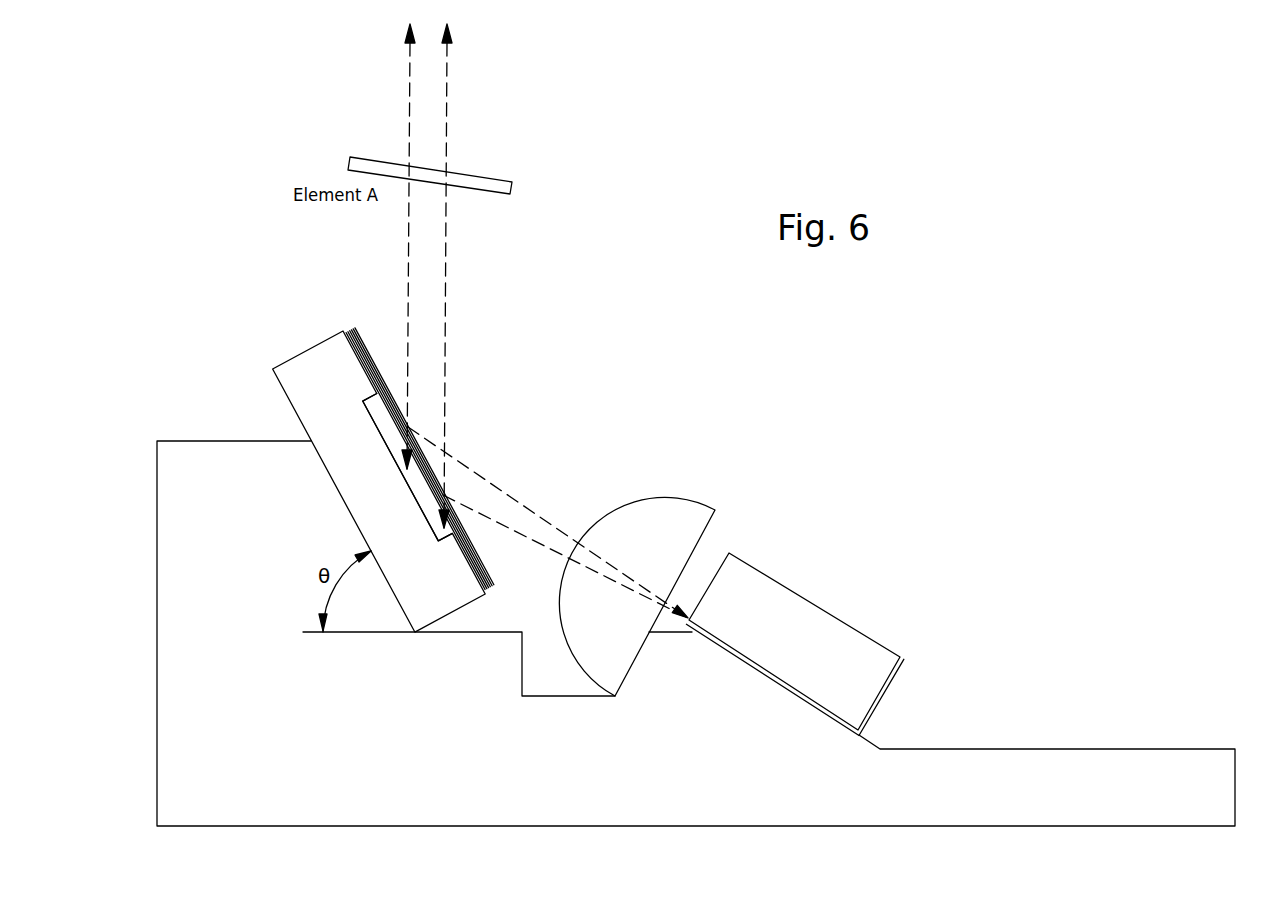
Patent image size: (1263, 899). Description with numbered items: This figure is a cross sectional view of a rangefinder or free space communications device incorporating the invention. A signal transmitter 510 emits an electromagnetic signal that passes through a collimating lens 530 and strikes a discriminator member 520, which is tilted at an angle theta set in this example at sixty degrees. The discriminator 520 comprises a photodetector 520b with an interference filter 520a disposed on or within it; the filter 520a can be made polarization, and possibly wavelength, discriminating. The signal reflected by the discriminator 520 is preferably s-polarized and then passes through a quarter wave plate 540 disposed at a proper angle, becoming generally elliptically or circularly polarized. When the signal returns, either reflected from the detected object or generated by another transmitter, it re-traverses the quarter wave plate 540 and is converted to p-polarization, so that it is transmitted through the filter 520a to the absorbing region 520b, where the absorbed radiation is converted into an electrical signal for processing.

The signal transmitter 510 is at (887, 705).
The discriminator member 520 is at (309, 351).
The interference filter 520a is at (498, 569).
The photodetector 520b is at (421, 532).
The collimating lens 530 is at (617, 506).
The quarter wave plate 540 is at (512, 187).